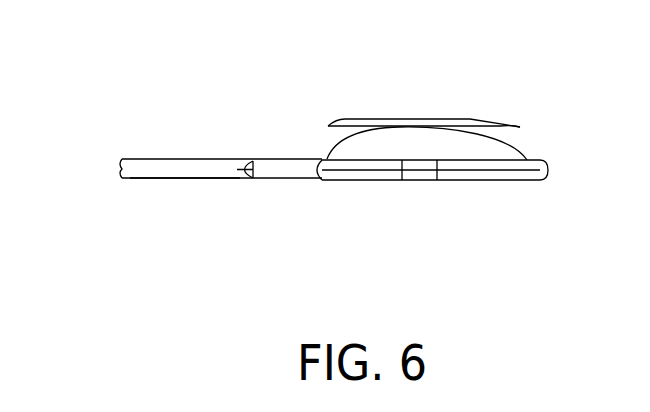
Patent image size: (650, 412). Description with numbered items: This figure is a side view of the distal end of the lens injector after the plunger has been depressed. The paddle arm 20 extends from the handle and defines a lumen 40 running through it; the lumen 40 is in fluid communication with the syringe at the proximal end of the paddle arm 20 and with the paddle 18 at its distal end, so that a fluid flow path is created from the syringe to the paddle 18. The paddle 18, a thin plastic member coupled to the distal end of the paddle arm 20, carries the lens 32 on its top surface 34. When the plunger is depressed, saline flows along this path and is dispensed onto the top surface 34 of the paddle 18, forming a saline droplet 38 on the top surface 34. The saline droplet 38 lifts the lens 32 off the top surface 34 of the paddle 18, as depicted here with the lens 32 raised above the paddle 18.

The paddle 18 is at (195, 156).
The paddle arm 20 is at (172, 173).
The lumen 40 is at (121, 165).
The top surface 34 is at (527, 159).
The saline droplet 38 is at (487, 146).
The lens 32 is at (378, 118).